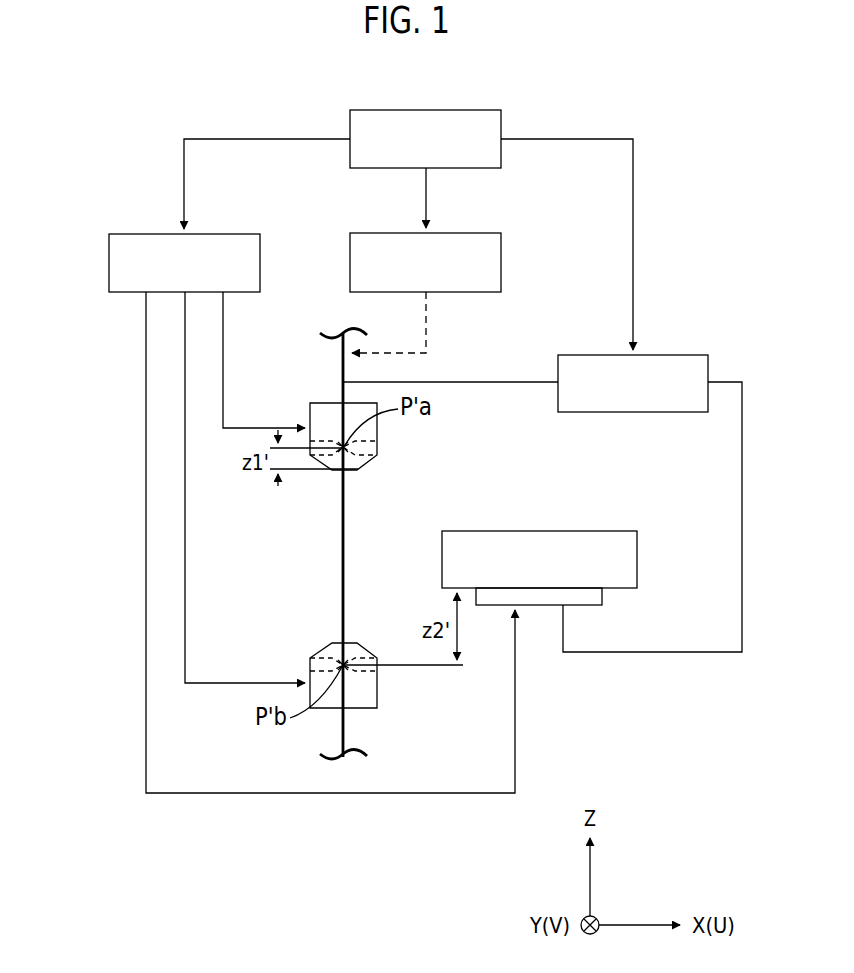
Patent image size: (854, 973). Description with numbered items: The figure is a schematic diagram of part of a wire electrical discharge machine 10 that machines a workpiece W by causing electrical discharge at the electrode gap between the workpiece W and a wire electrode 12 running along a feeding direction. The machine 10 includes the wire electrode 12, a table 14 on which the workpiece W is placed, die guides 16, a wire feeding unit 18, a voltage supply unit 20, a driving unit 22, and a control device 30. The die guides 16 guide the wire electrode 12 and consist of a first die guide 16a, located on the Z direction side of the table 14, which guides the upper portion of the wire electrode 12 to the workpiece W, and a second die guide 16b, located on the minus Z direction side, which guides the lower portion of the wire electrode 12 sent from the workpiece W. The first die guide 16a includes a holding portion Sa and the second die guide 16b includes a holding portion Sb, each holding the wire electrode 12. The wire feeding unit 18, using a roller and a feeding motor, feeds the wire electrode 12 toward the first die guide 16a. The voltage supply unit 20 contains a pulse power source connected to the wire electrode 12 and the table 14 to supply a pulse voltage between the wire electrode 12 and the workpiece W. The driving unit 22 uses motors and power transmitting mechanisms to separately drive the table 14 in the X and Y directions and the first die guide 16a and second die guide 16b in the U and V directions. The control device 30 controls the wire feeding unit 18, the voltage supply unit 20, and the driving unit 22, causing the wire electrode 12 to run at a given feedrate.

The wire electrical discharge machine 10 is at (167, 107).
The wire electrode 12 is at (345, 558).
The table 14 is at (587, 595).
The die guides 16 is at (256, 515).
The first die guide 16a is at (340, 466).
The second die guide 16b is at (337, 653).
The wire feeding unit 18 is at (350, 263).
The voltage supply unit 20 is at (672, 355).
The driving unit 22 is at (109, 263).
The control device 30 is at (428, 110).
The workpiece W is at (495, 531).
The holding portion Sa is at (358, 448).
The holding portion Sb is at (325, 660).